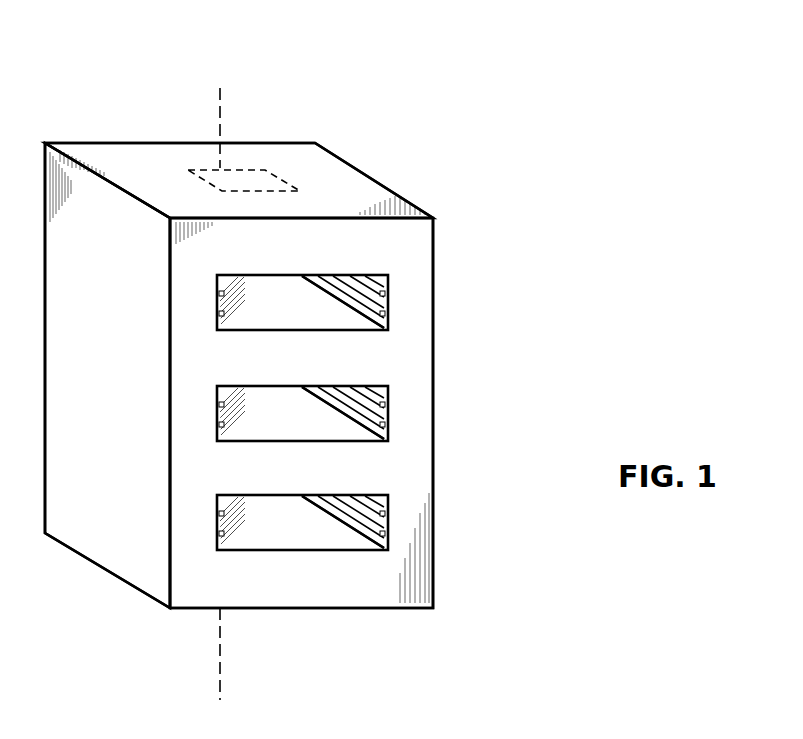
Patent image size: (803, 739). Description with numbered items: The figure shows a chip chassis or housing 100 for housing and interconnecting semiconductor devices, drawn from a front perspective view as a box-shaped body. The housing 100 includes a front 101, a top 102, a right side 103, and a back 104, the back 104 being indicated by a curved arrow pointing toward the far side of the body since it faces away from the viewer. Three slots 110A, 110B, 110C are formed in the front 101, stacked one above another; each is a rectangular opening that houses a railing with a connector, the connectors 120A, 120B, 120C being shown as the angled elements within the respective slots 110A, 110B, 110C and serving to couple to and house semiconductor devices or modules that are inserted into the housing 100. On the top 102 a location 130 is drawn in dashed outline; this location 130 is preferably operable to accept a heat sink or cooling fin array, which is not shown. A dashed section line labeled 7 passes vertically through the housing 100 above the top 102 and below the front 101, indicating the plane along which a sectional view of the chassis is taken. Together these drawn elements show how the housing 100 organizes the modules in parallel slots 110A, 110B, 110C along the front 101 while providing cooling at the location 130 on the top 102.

The chip chassis or housing 100 is at (398, 160).
The front 101 is at (222, 598).
The top 102 is at (195, 199).
The right side 103 is at (130, 524).
The back 104 is at (265, 118).
The location 130 is at (258, 180).
The section line 7- 7 is at (220, 88).
The slot 110A is at (334, 276).
The connector 120A is at (390, 304).
The slot 110B is at (334, 387).
The connector 120B is at (390, 412).
The slot 110C is at (334, 497).
The connector 120C is at (390, 525).